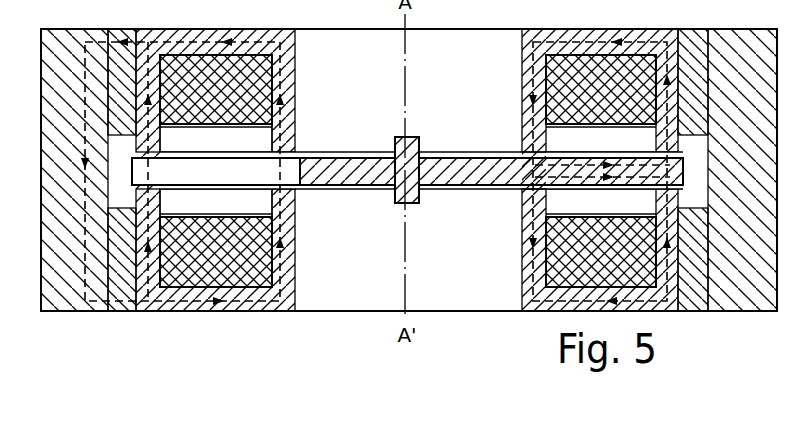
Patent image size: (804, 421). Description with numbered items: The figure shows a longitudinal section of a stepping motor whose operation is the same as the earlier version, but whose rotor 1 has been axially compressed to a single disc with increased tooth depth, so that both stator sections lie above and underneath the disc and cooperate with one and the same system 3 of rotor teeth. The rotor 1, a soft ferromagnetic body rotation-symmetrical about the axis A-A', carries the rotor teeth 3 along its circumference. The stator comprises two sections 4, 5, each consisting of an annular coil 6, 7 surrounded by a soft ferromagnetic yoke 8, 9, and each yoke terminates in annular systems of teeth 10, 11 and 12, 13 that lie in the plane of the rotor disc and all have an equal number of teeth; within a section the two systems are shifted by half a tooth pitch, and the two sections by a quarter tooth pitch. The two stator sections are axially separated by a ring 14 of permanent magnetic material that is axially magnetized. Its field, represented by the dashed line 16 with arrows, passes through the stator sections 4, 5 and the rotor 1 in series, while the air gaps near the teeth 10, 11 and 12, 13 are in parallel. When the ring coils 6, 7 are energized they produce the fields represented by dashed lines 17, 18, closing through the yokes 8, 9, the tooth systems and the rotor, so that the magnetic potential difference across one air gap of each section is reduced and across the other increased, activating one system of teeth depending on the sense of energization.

The rotor 1 is at (447, 168).
The rotor teeth 3 is at (172, 170).
The first stator section 4 is at (560, 62).
The second stator section 5 is at (555, 280).
The annular coil of first stator section 6 is at (238, 64).
The annular coil of second stator section 7 is at (205, 272).
The yoke of first stator section 8 is at (172, 42).
The yoke of second stator section 9 is at (170, 303).
The system of teeth 10 is at (162, 142).
The system of teeth 11 is at (271, 142).
The system of teeth 12 is at (160, 201).
The system of teeth 13 is at (272, 201).
The ring of permanent magnetic material 14 is at (730, 287).
The dashed line representing permanent magnet field 16 is at (117, 40).
The dashed line representing coil field 17 is at (620, 40).
The dashed line representing coil field 18 is at (612, 303).